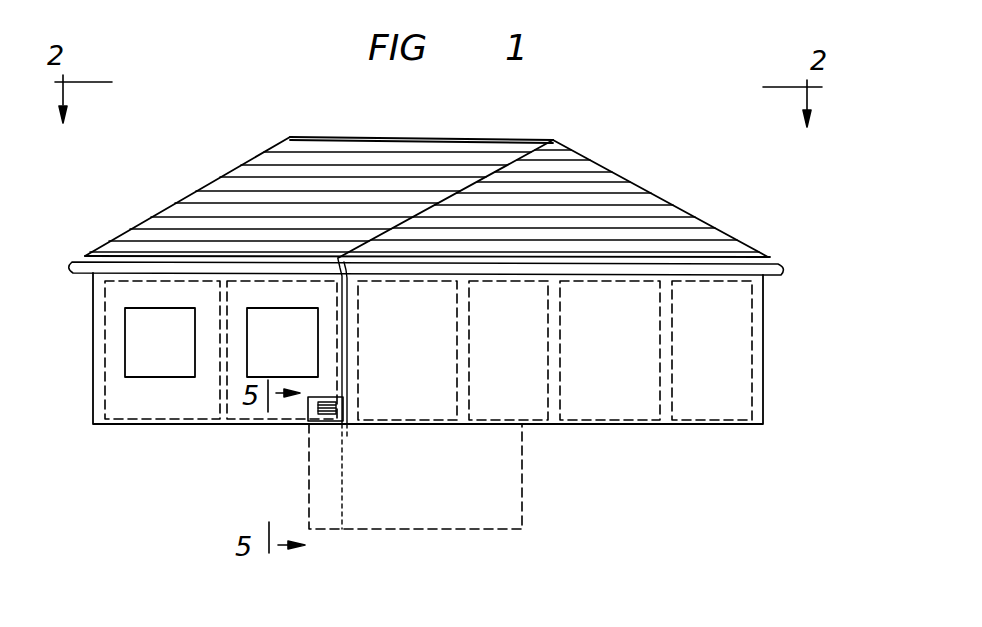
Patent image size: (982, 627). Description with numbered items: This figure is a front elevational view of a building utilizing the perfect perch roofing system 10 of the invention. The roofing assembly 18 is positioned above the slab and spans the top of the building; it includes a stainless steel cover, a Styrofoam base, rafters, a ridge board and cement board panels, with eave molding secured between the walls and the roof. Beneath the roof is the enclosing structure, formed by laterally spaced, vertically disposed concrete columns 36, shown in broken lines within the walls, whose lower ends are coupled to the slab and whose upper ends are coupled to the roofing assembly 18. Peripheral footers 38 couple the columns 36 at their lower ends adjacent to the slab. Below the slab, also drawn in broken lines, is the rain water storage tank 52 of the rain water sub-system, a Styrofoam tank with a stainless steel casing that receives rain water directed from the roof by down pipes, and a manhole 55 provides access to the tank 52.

The perfect perch roofing system 10 is at (612, 138).
The roofing assembly 18 is at (766, 259).
The concrete columns 36 is at (740, 318).
The peripheral footers 38 is at (128, 410).
The rain water storage tank 52 is at (522, 480).
The manhole 55 is at (309, 421).